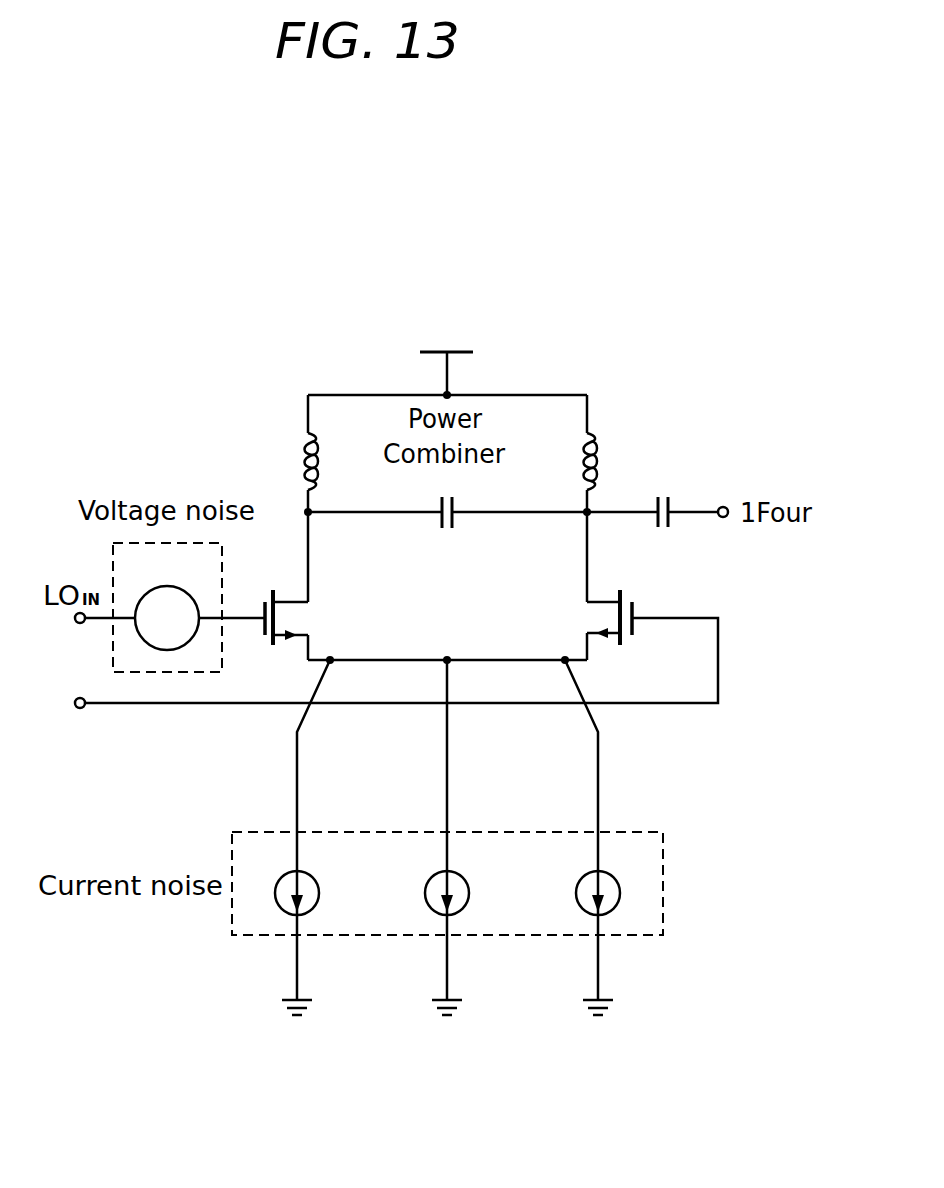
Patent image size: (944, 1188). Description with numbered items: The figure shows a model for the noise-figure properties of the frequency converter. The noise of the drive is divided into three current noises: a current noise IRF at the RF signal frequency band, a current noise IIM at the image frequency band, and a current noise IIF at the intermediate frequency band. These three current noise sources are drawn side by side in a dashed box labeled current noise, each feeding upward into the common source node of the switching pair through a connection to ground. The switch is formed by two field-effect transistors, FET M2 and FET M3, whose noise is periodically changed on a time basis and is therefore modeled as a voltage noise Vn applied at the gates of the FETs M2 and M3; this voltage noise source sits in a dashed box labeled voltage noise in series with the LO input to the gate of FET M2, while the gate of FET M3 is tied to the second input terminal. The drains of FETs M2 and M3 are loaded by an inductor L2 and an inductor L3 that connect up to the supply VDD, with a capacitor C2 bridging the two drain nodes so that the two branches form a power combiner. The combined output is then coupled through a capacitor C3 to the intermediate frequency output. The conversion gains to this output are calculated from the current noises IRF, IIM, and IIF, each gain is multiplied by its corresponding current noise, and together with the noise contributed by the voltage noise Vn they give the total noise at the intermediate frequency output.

The supply voltage VDD is at (446, 356).
The inductor L2 is at (312, 461).
The inductor L3 is at (617, 461).
The capacitor C2 is at (447, 533).
The output coupling capacitor C3 is at (652, 533).
The FET M2 is at (308, 625).
The FET M3 is at (587, 625).
The voltage noise Vn is at (166, 600).
The current noise IRF is at (283, 879).
The current noise IIM is at (434, 878).
The current noise IIF is at (585, 878).